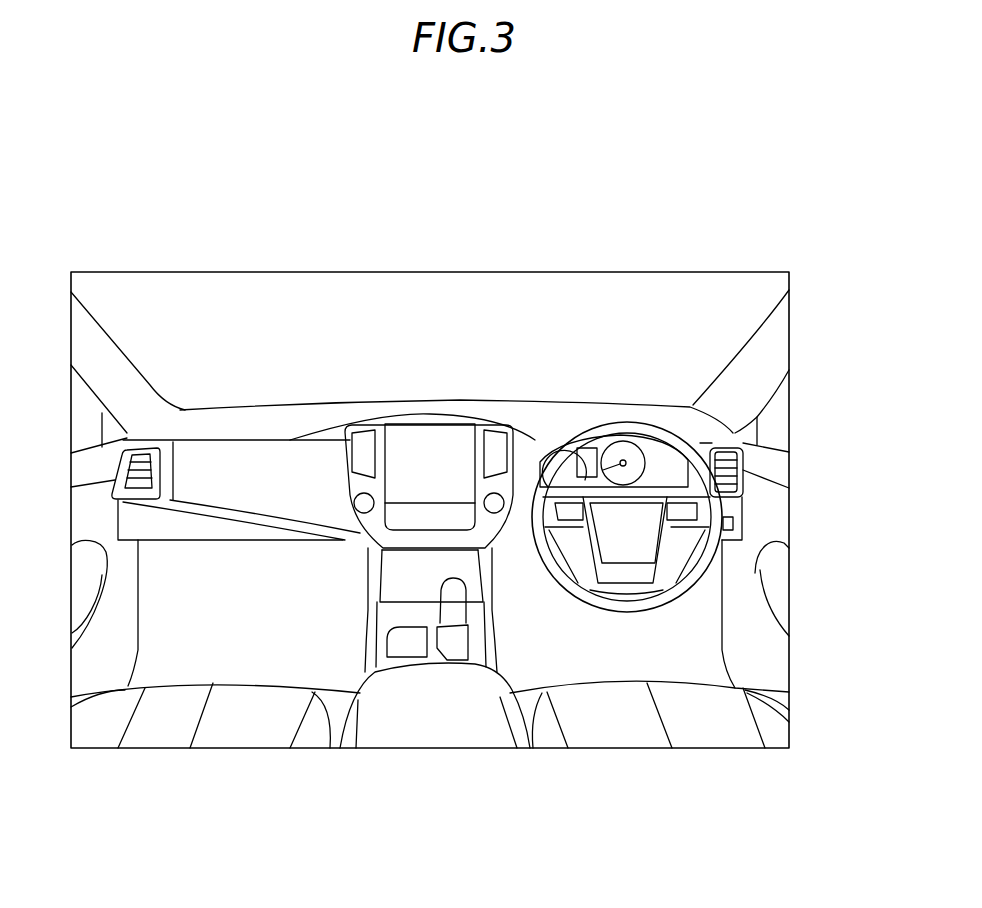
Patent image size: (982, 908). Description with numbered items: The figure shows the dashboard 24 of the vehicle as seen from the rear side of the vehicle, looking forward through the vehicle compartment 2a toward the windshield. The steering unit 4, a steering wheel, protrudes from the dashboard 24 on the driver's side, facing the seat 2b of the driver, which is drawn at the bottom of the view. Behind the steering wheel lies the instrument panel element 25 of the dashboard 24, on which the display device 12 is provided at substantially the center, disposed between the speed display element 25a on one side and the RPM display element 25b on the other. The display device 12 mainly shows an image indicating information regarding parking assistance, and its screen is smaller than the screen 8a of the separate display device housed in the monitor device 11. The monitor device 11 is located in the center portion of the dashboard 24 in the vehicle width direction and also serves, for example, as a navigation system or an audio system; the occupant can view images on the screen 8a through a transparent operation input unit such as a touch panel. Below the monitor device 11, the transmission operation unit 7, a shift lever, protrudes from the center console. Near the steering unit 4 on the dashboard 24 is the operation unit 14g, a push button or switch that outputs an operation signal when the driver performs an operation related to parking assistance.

The vehicle compartment 2a is at (253, 284).
The seat 2b is at (613, 740).
The steering unit 4 is at (652, 425).
The transmission operation unit 7 is at (455, 617).
The screen 8a is at (452, 440).
The monitor device 11 is at (420, 408).
The display device 12 is at (588, 465).
The operation unit 14g is at (735, 523).
The dashboard 24 is at (334, 400).
The instrument panel element 25 is at (600, 434).
The speed display element 25a is at (542, 448).
The RPM display element 25b is at (623, 450).